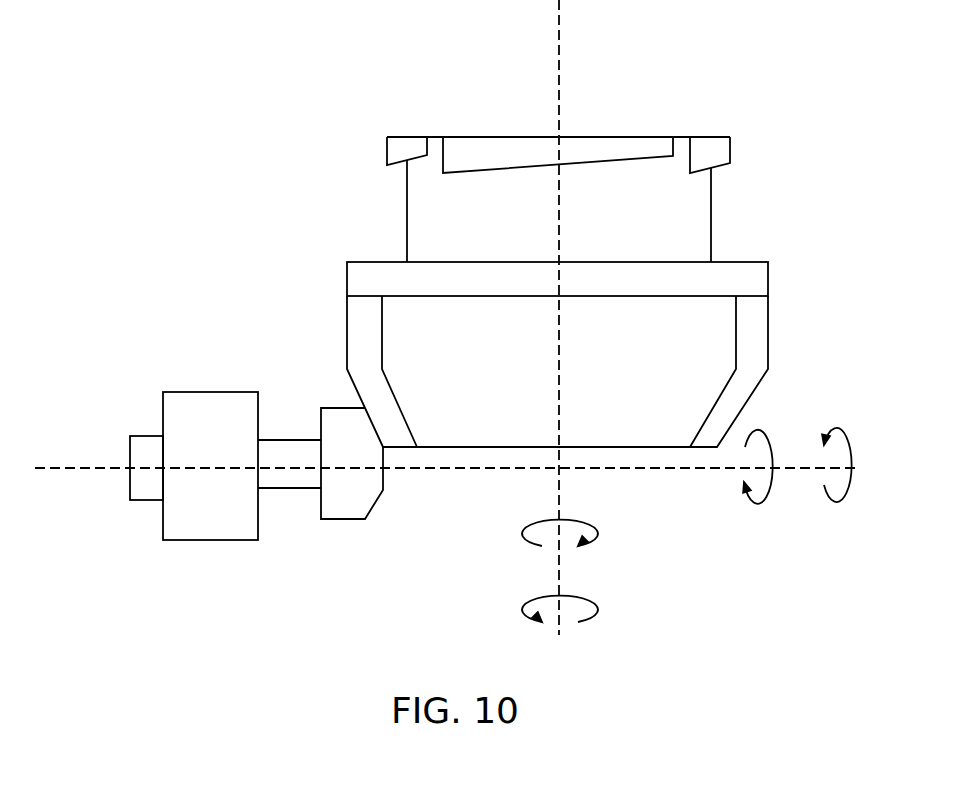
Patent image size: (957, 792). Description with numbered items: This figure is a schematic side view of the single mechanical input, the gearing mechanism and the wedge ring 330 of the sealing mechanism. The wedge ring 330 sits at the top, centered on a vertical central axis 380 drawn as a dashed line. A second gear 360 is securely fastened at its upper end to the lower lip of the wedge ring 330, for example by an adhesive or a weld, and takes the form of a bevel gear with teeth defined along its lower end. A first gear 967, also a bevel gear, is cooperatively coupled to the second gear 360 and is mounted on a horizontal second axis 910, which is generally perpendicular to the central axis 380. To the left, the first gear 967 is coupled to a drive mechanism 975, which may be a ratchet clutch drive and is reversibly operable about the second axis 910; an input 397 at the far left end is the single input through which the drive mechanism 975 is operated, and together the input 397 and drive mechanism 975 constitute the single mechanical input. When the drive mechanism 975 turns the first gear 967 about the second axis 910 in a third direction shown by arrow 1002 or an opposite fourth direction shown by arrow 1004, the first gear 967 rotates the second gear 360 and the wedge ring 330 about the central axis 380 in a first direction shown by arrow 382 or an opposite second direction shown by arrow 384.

The central axis 380 is at (560, 33).
The second axis 910 is at (63, 467).
The wedge ring 330 is at (713, 204).
The second gear 360 is at (769, 338).
The first gear 967 is at (340, 408).
The drive mechanism 975 is at (223, 525).
The input 397 is at (130, 488).
The arrow depicting first direction 382 is at (581, 533).
The arrow depicting second direction 384 is at (538, 609).
The arrow depicting fourth direction 1004 is at (758, 481).
The arrow depicting third direction 1002 is at (837, 480).